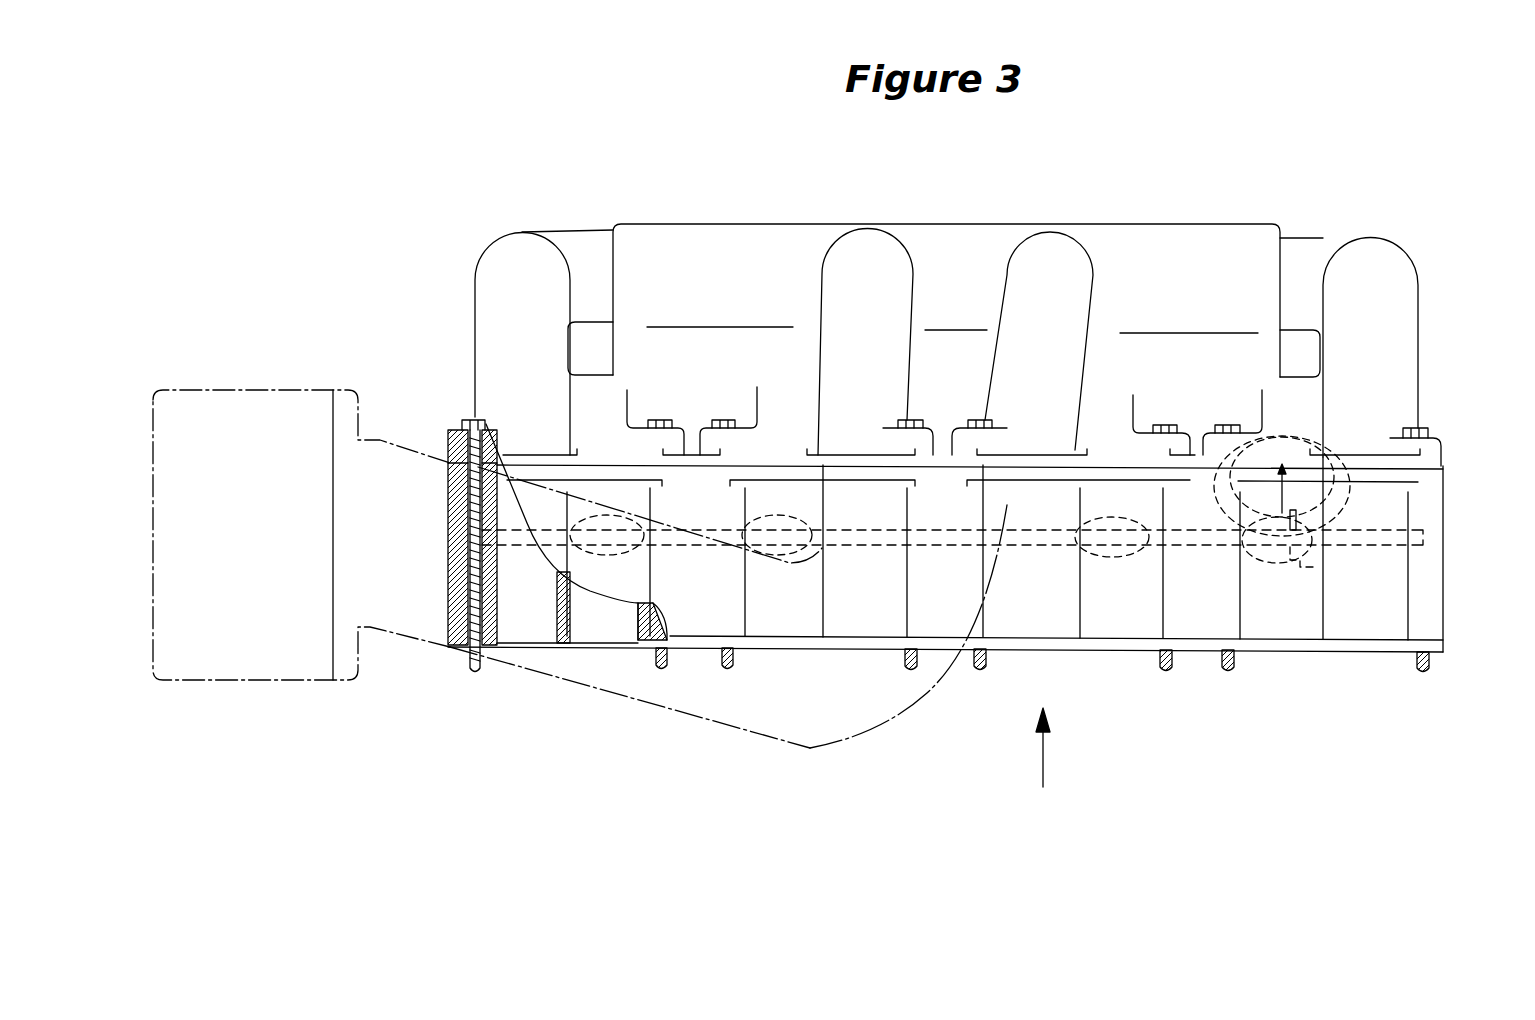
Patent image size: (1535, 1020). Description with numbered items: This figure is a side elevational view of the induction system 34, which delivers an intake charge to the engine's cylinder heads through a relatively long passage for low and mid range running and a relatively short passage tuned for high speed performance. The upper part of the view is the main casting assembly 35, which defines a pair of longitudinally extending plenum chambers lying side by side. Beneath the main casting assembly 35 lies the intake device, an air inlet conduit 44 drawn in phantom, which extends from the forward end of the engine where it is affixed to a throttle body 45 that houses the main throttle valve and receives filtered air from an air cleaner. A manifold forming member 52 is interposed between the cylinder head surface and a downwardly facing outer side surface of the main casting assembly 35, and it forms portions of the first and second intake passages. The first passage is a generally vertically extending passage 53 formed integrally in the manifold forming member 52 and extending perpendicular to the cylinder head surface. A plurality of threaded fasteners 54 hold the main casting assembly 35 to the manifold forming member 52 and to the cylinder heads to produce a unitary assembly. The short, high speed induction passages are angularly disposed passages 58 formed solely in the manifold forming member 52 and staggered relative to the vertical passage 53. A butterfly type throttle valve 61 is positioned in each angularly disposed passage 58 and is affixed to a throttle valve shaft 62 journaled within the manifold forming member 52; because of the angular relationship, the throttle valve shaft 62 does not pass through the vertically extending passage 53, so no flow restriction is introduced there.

The induction system 34 is at (1057, 822).
The main casting assembly 35 is at (1225, 224).
The air inlet conduit 44 is at (822, 746).
The throttle body 45 is at (282, 680).
The manifold forming member 52 is at (1275, 652).
The vertically extending passage 53 is at (497, 617).
The threaded fasteners 54 is at (468, 418).
The angularly disposed passage 58 is at (572, 628).
The butterfly type throttle valve 61 is at (605, 555).
The throttle valve shaft 62 is at (1383, 548).